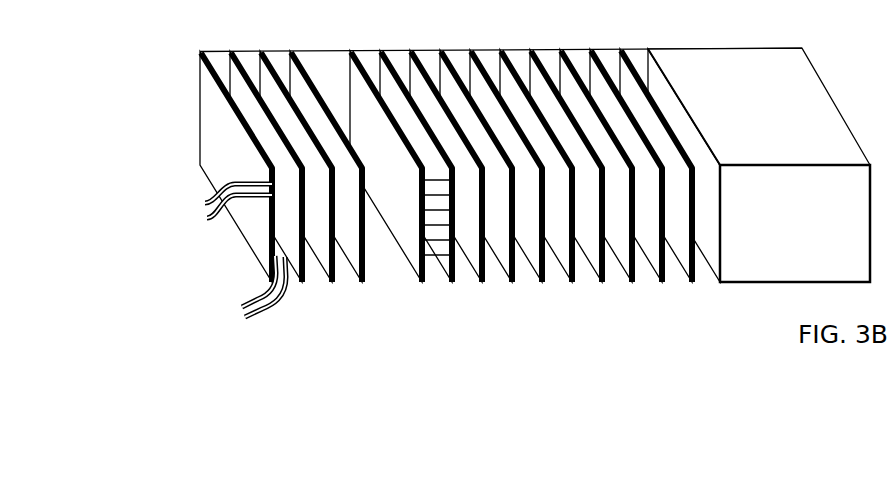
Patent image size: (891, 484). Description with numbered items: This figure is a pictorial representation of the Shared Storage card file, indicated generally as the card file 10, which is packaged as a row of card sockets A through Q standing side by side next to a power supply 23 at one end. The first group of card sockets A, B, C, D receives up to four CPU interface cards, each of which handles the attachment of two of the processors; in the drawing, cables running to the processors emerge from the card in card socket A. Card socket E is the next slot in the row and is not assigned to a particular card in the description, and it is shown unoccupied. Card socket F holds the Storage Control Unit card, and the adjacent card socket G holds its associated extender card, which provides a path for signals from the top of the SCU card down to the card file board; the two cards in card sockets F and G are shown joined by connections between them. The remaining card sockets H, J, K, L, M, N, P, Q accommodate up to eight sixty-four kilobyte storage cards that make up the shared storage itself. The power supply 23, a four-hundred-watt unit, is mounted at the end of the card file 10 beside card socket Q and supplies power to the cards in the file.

The computer system card cage 10 is at (176, 99).
The power supply 23 is at (817, 100).
The card socket A is at (233, 155).
The card socket B is at (263, 155).
The card socket C is at (293, 155).
The card socket D is at (323, 155).
The card socket E is at (321, 38).
The card socket F is at (397, 155).
The card socket G is at (413, 155).
The card socket H is at (443, 155).
The card socket J is at (474, 155).
The card socket K is at (503, 155).
The card socket L is at (534, 155).
The card socket M is at (563, 155).
The card socket N is at (593, 155).
The card socket P is at (624, 155).
The card socket Q is at (653, 155).